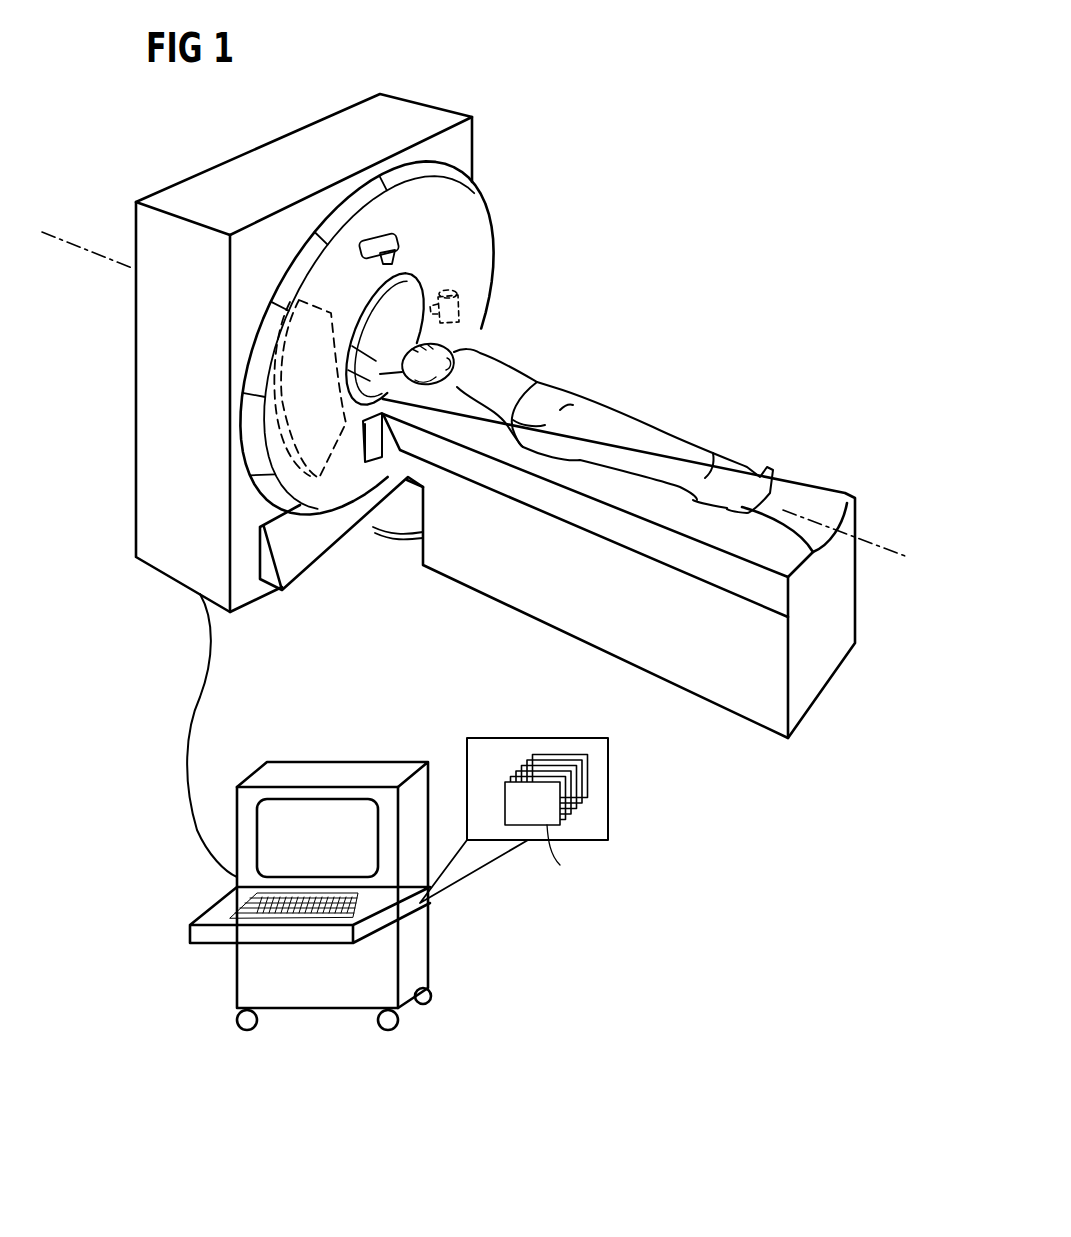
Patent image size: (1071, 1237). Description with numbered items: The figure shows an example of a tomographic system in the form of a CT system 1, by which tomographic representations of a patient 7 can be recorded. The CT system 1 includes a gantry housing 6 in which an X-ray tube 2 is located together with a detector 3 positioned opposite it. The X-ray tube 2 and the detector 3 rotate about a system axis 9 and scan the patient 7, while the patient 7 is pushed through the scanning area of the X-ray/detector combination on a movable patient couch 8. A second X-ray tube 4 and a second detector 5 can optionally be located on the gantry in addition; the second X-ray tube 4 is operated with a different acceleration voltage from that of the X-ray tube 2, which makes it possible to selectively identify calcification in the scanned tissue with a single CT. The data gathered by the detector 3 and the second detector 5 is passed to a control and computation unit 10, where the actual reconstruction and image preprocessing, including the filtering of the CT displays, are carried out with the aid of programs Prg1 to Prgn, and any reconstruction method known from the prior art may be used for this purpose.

The CT system 1 is at (718, 208).
The X-ray tube 2 is at (378, 231).
The detector 3 is at (384, 447).
The second X-ray tube 4 is at (462, 303).
The second detector 5 is at (282, 482).
The gantry housing 6 is at (147, 510).
The patient 7 is at (515, 378).
The movable patient couch 8 is at (623, 638).
The system axis 9 is at (878, 547).
The control and computation unit 10 is at (417, 950).